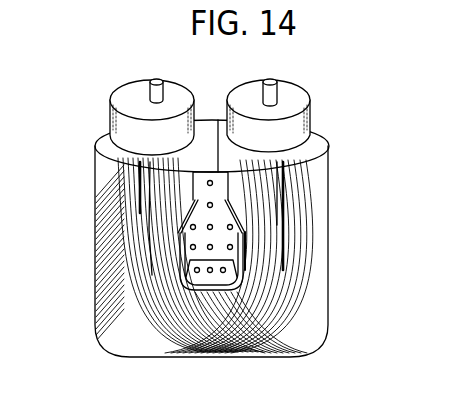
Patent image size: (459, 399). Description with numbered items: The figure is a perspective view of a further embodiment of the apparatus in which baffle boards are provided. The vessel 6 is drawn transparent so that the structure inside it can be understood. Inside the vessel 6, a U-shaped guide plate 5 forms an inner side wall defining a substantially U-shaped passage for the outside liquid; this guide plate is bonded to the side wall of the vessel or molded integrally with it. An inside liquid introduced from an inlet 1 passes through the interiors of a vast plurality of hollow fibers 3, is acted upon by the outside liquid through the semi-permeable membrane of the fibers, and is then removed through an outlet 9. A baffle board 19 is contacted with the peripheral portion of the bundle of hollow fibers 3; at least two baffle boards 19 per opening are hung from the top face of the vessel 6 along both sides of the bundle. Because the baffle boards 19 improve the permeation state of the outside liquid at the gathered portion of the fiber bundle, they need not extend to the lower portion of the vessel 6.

The inlet 1 is at (158, 90).
The outlet 9 is at (274, 95).
The vessel 6 is at (325, 162).
The baffle board 19 is at (147, 200).
The U-shaped guide plate 5 is at (237, 250).
The hollow fibers 3 is at (313, 282).